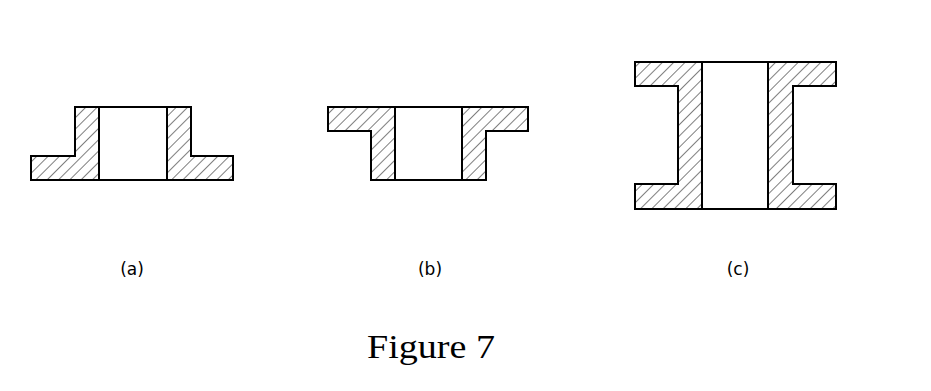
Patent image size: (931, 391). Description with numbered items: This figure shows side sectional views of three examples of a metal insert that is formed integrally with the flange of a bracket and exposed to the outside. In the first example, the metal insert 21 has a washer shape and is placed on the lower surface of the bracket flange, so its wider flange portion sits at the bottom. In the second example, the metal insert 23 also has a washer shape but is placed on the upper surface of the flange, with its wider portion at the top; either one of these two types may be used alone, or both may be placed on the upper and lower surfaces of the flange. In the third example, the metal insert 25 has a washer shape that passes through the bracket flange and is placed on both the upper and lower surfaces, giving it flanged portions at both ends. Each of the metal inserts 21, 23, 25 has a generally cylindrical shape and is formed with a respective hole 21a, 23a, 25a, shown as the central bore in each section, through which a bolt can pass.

The metal insert 21 is at (63, 177).
The hole 21a is at (165, 122).
The metal insert 23 is at (353, 122).
The hole 23a is at (458, 122).
The metal insert 25 is at (808, 65).
The hole 25a is at (767, 78).